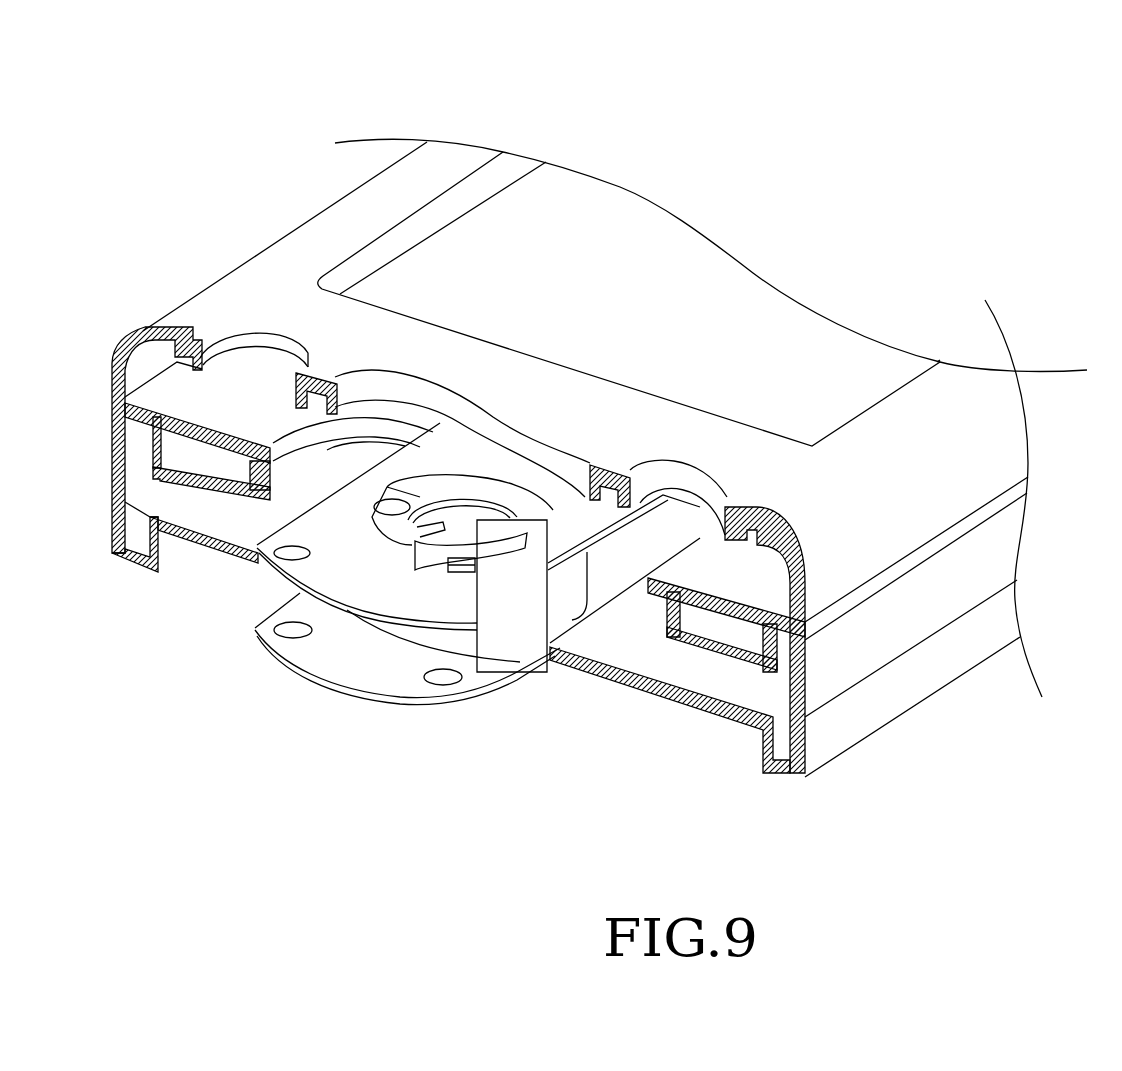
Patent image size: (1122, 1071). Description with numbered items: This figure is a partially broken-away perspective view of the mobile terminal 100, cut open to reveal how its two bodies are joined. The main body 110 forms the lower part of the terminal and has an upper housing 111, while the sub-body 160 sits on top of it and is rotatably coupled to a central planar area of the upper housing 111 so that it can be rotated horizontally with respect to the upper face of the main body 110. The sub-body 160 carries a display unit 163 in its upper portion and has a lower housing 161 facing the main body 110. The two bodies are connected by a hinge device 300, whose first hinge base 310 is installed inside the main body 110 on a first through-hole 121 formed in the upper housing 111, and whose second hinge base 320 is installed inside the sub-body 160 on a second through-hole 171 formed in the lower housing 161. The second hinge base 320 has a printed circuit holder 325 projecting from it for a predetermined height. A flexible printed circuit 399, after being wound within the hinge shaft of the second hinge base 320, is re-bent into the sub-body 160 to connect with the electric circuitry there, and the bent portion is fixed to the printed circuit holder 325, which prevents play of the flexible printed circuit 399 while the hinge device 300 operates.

The mobile terminal 100 is at (722, 113).
The main body 110 is at (905, 737).
The upper housing 111 is at (977, 557).
The first through-hole 121 is at (305, 467).
The sub-body 160 is at (318, 193).
The lower housing 161 is at (725, 567).
The display unit 163 is at (793, 347).
The second through-hole 171 is at (360, 423).
The hinge device 300 is at (372, 608).
The first hinge base 310 is at (353, 663).
The second hinge base 320 is at (253, 563).
The printed circuit holder 325 is at (465, 548).
The flexible printed circuit 399 is at (512, 640).